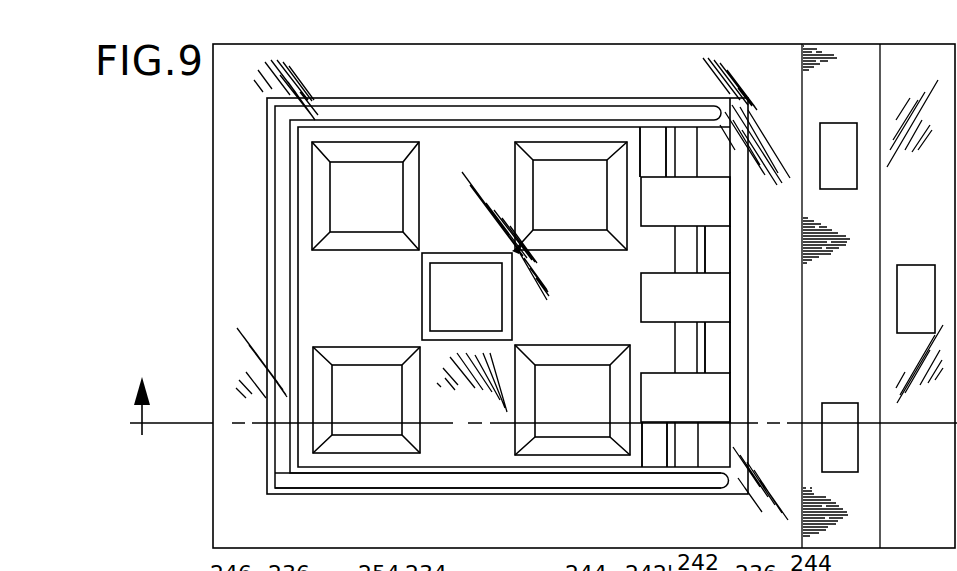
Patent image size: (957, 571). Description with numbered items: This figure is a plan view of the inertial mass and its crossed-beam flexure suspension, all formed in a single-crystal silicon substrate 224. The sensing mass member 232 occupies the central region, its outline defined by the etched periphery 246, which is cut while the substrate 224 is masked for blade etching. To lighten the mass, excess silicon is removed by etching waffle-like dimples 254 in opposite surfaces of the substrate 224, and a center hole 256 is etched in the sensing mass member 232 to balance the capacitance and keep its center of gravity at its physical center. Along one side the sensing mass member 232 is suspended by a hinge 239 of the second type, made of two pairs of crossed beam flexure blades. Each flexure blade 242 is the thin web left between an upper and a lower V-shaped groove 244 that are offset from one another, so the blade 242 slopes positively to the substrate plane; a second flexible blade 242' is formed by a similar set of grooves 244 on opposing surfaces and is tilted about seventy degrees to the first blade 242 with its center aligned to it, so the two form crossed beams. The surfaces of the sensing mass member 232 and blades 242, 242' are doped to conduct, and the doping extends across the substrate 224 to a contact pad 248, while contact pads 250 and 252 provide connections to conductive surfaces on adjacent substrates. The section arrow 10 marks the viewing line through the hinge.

The section line / view direction arrow 10 is at (141, 392).
The substrate 224 is at (223, 495).
The sensing mass member 232 is at (297, 263).
The hinge 239 is at (678, 463).
The flexure blade 242 is at (686, 292).
The second flexible blade 242' is at (655, 299).
The V-shaped groove 244 is at (653, 138).
The periphery 246 is at (377, 493).
The contact pad 248 is at (833, 128).
The contact pad 250 is at (919, 268).
The contact pad 252 is at (835, 408).
The waffle-like dimples 254 is at (363, 245).
The center hole 256 is at (493, 313).